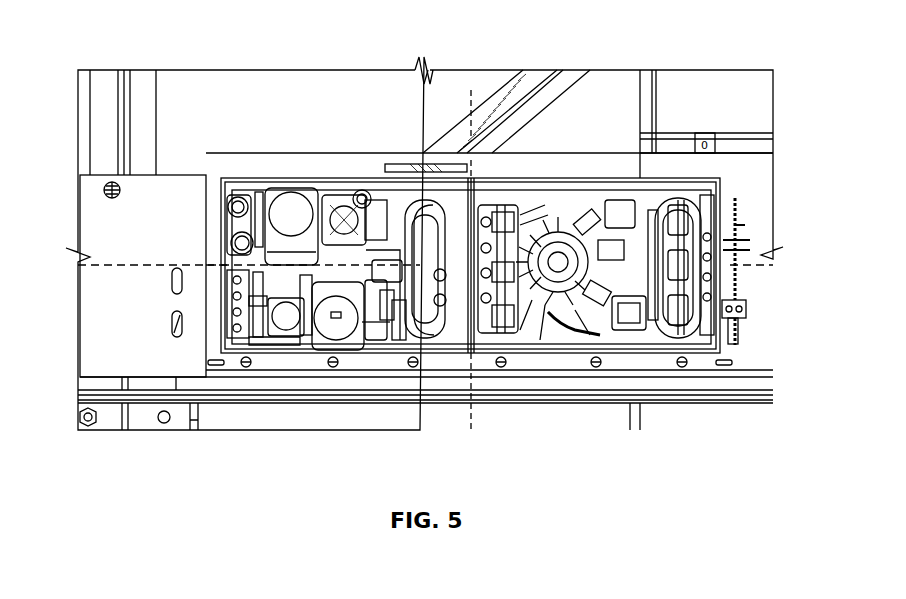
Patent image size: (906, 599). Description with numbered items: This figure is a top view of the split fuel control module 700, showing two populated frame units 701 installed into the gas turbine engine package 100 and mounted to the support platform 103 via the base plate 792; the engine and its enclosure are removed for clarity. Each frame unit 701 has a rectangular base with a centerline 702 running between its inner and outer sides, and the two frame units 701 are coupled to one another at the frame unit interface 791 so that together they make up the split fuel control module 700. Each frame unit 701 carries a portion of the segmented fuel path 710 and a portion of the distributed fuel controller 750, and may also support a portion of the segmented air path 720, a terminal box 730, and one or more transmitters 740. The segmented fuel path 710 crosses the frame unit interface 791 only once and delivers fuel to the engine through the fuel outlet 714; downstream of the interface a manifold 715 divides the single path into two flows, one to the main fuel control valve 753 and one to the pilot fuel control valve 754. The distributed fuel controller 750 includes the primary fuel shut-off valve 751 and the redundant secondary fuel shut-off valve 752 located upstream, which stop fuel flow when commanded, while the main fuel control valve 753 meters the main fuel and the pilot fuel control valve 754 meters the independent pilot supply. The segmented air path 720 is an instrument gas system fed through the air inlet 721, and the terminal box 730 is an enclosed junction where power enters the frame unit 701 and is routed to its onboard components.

The gas turbine engine package 100 is at (145, 40).
The support platform 103 is at (213, 410).
The split fuel control module 700 is at (470, 272).
The frame unit 701 is at (248, 172).
The centerline 702 is at (182, 266).
The segmented fuel path 710 is at (376, 330).
The fuel outlet 714 is at (232, 244).
The manifold 715 is at (398, 340).
The segmented air path 720 is at (748, 308).
The air inlet 721 is at (752, 328).
The terminal box 730 is at (433, 205).
The transmitter 740 is at (505, 300).
The distributed fuel controller 750 is at (553, 300).
The primary fuel shut-off valve 751 is at (625, 318).
The secondary fuel shut-off valve 752 is at (552, 322).
The main fuel control valve 753 is at (294, 222).
The pilot fuel control valve 754 is at (336, 330).
The frame unit interface 791 is at (468, 132).
The base plate 792 is at (362, 190).